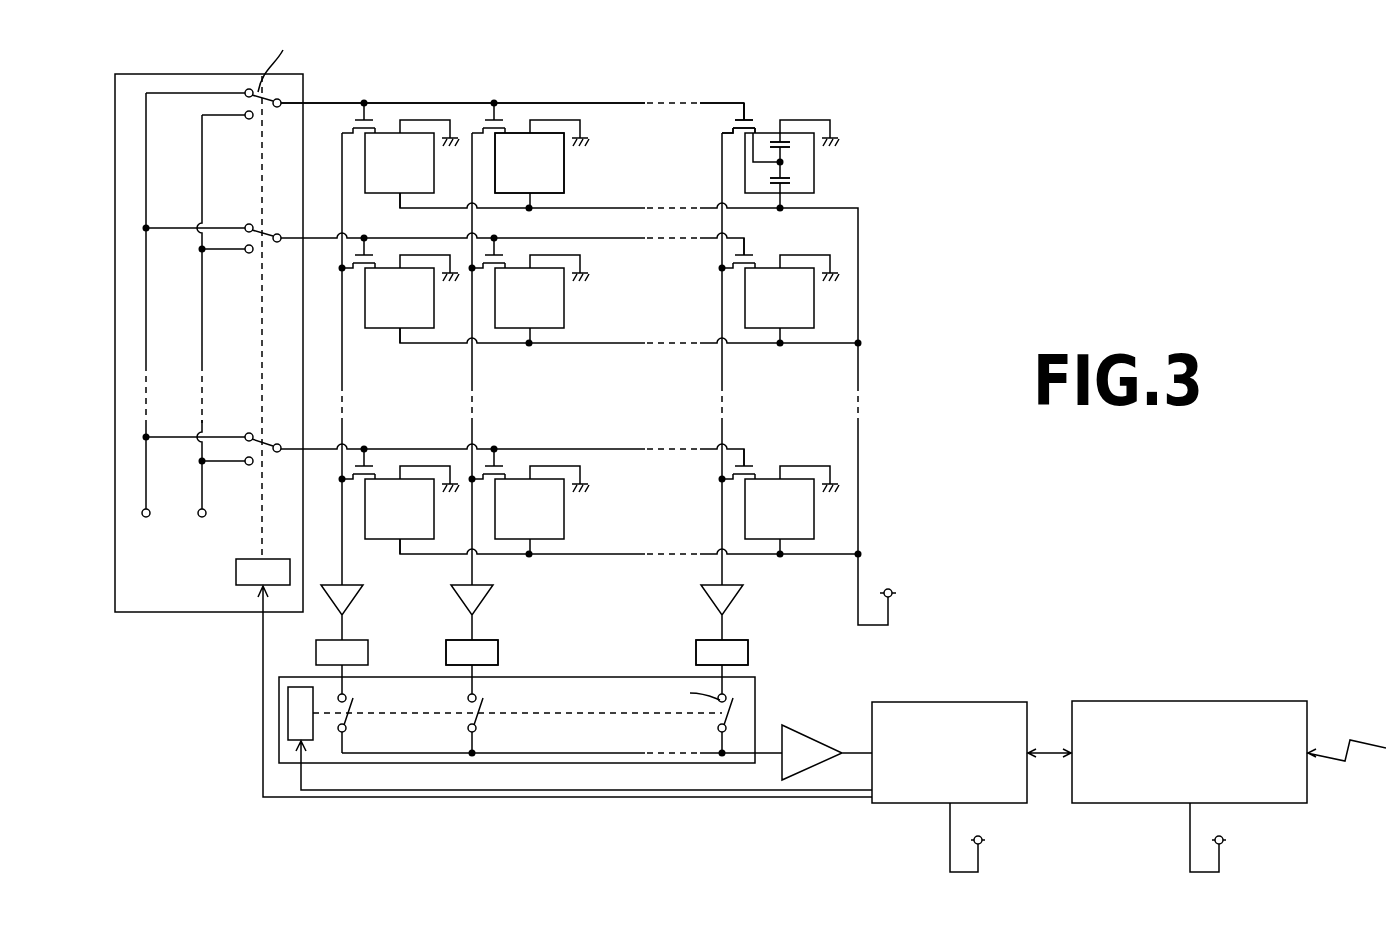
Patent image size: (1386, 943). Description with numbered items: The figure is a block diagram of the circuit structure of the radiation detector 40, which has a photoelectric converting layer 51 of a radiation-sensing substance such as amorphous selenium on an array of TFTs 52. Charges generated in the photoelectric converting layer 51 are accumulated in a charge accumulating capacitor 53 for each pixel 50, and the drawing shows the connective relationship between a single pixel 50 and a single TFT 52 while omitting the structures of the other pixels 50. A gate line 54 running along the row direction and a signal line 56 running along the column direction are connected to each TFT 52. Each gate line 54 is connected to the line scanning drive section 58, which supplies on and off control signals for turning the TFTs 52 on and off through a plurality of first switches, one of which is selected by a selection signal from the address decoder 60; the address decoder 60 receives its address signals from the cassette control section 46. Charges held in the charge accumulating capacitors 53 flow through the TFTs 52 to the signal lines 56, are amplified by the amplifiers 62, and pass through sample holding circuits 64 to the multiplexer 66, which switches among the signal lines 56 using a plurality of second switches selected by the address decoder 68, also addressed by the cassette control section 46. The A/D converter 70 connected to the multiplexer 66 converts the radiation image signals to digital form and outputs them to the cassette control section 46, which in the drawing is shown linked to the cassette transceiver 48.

The radiation detector 40 is at (754, 72).
The cassette control section 46 is at (950, 702).
The cassette transceiver 48 is at (1190, 701).
The pixel 50 is at (762, 132).
The photoelectric converting layer 51 is at (790, 180).
The TFT 52 is at (730, 122).
The charge accumulating capacitor 53 is at (790, 145).
The gate line 54 is at (702, 102).
The signal line 56 is at (722, 165).
The line scanning drive section 58 is at (170, 612).
The address decoder 60 is at (236, 572).
The amplifier 62 is at (488, 600).
The sample holding circuit 64 is at (500, 655).
The multiplexer 66 is at (605, 677).
The address decoder 68 is at (300, 687).
The A/D converter 70 is at (795, 735).